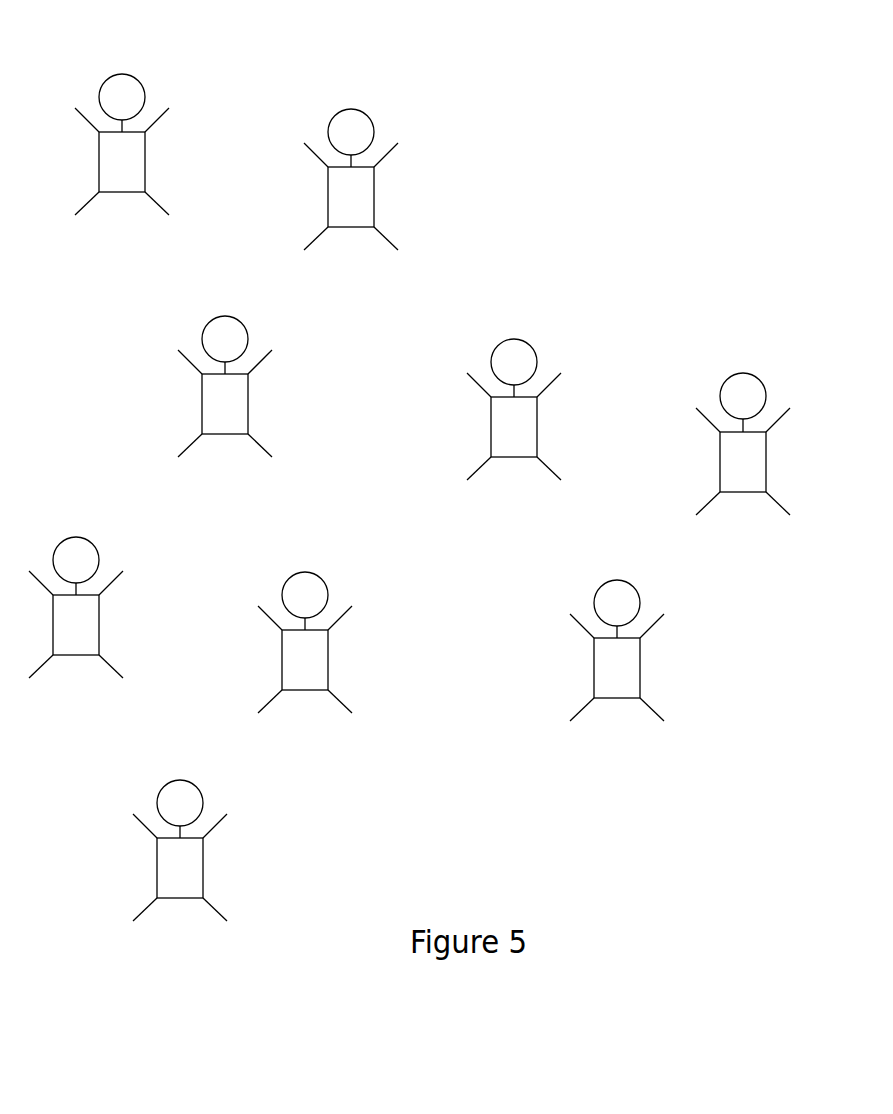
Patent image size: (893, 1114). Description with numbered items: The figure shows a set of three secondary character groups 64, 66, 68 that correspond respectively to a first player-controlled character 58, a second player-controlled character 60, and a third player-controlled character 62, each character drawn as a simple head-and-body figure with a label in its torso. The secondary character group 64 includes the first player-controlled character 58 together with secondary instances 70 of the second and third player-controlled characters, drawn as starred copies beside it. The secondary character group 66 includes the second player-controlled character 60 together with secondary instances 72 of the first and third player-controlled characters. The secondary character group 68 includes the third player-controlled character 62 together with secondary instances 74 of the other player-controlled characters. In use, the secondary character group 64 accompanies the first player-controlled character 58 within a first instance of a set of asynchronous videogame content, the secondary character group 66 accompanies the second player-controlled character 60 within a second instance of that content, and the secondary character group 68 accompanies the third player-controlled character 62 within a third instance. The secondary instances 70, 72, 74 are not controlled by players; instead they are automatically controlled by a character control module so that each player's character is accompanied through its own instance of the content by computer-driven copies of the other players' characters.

The first player-controlled character 58 is at (142, 83).
The second player-controlled character 60 is at (757, 378).
The third player-controlled character 62 is at (202, 790).
The secondary character group 64 is at (328, 46).
The secondary character group 66 is at (719, 310).
The secondary character group 68 is at (283, 510).
The secondary instances 70 is at (366, 112).
The secondary instances 72 is at (536, 349).
The secondary instances 74 is at (98, 548).